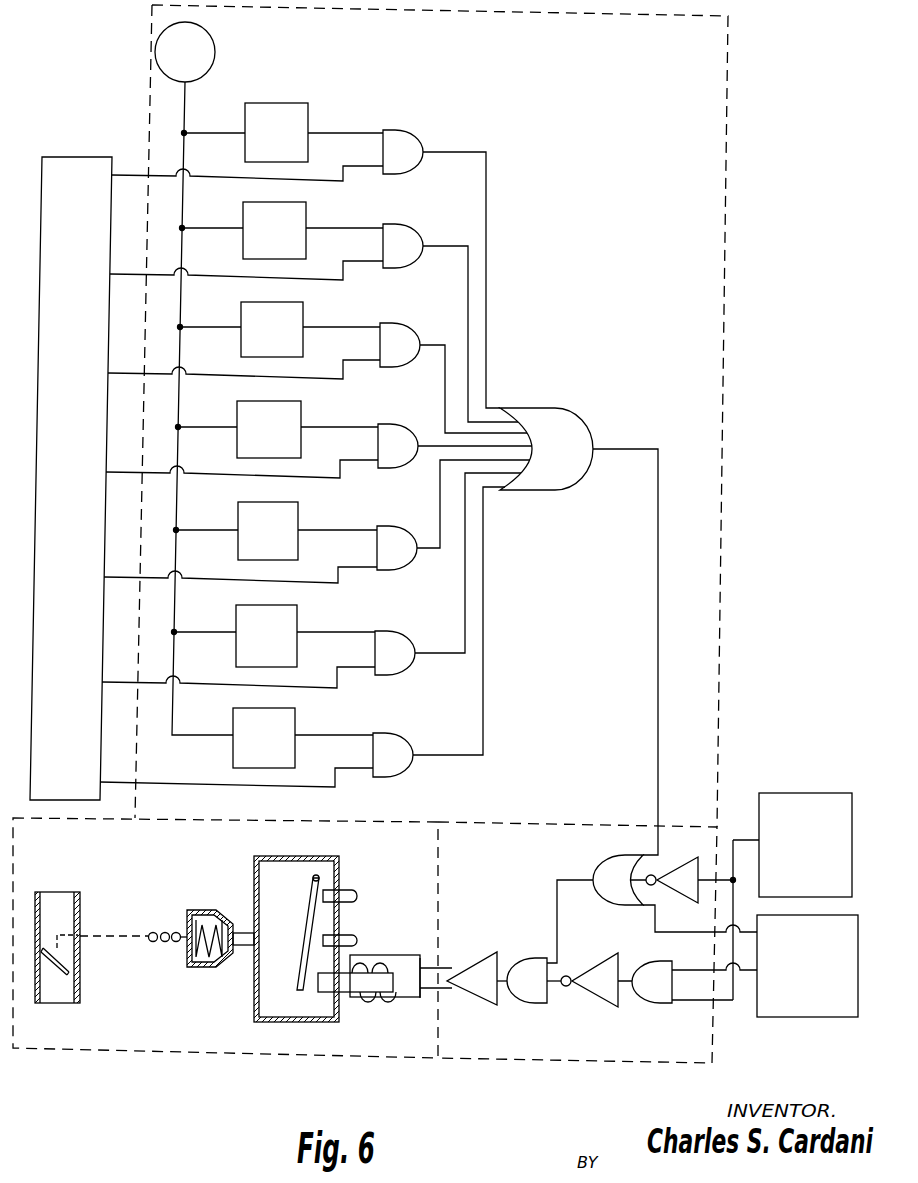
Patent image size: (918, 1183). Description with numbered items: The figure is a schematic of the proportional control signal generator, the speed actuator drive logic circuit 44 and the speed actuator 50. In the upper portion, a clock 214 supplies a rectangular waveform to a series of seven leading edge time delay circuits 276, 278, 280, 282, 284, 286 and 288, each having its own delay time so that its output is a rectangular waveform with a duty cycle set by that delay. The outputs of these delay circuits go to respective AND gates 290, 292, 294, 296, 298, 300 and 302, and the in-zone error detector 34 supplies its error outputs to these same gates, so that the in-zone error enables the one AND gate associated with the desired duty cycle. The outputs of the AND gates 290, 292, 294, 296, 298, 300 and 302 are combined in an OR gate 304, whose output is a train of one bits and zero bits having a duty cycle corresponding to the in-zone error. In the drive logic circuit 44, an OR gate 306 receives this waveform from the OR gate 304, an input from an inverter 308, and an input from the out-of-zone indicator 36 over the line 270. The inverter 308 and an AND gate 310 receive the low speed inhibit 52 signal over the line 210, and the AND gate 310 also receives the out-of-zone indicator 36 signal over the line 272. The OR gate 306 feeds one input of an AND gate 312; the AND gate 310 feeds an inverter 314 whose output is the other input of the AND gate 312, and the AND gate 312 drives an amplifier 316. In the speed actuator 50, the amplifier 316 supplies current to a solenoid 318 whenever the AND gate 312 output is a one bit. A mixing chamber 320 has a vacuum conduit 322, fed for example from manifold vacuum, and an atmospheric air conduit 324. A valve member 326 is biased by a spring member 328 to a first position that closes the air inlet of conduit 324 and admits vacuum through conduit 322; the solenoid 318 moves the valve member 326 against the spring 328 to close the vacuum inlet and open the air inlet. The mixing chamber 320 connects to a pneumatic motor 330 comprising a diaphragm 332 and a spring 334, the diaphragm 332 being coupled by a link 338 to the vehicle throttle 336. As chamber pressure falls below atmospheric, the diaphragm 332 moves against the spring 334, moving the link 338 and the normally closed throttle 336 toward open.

The in-zone error detector 34 is at (62, 157).
The clock 214 is at (215, 52).
The leading edge time delay circuit 276 is at (293, 110).
The leading edge time delay circuit 278 is at (297, 222).
The leading edge time delay circuit 280 is at (296, 313).
The leading edge time delay circuit 282 is at (292, 415).
The leading edge time delay circuit 284 is at (292, 515).
The leading edge time delay circuit 286 is at (290, 615).
The leading edge time delay circuit 288 is at (288, 720).
The AND gate 290 is at (418, 142).
The AND gate 292 is at (416, 236).
The AND gate 294 is at (416, 338).
The AND gate 296 is at (413, 430).
The AND gate 298 is at (409, 532).
The AND gate 300 is at (414, 636).
The AND gate 302 is at (412, 749).
The OR gate 304 is at (560, 418).
The OR gate 306 is at (605, 872).
The inverter 308 is at (680, 868).
The line 210 is at (743, 840).
The line 270 is at (708, 932).
The line 272 is at (743, 975).
The AND gate 310 is at (655, 993).
The AND gate 312 is at (533, 958).
The inverter 314 is at (602, 965).
The amplifier 316 is at (480, 990).
The solenoid 318 is at (383, 985).
The mixing chamber 320 is at (292, 862).
The vacuum conduit 322 is at (358, 938).
The atmospheric air conduit 324 is at (358, 895).
The valve member 326 is at (310, 925).
The spring member 328 is at (330, 880).
The pneumatic motor 330 is at (197, 910).
The diaphragm 332 is at (205, 965).
The spring 334 is at (223, 966).
The vehicle throttle 336 is at (80, 956).
The link 338 is at (153, 942).
The low speed inhibit 52 is at (832, 797).
The out-of-zone indicator 36 is at (832, 1017).
The speed actuator 50 is at (112, 1052).
The speed actuator drive logic circuit 44 is at (545, 1058).